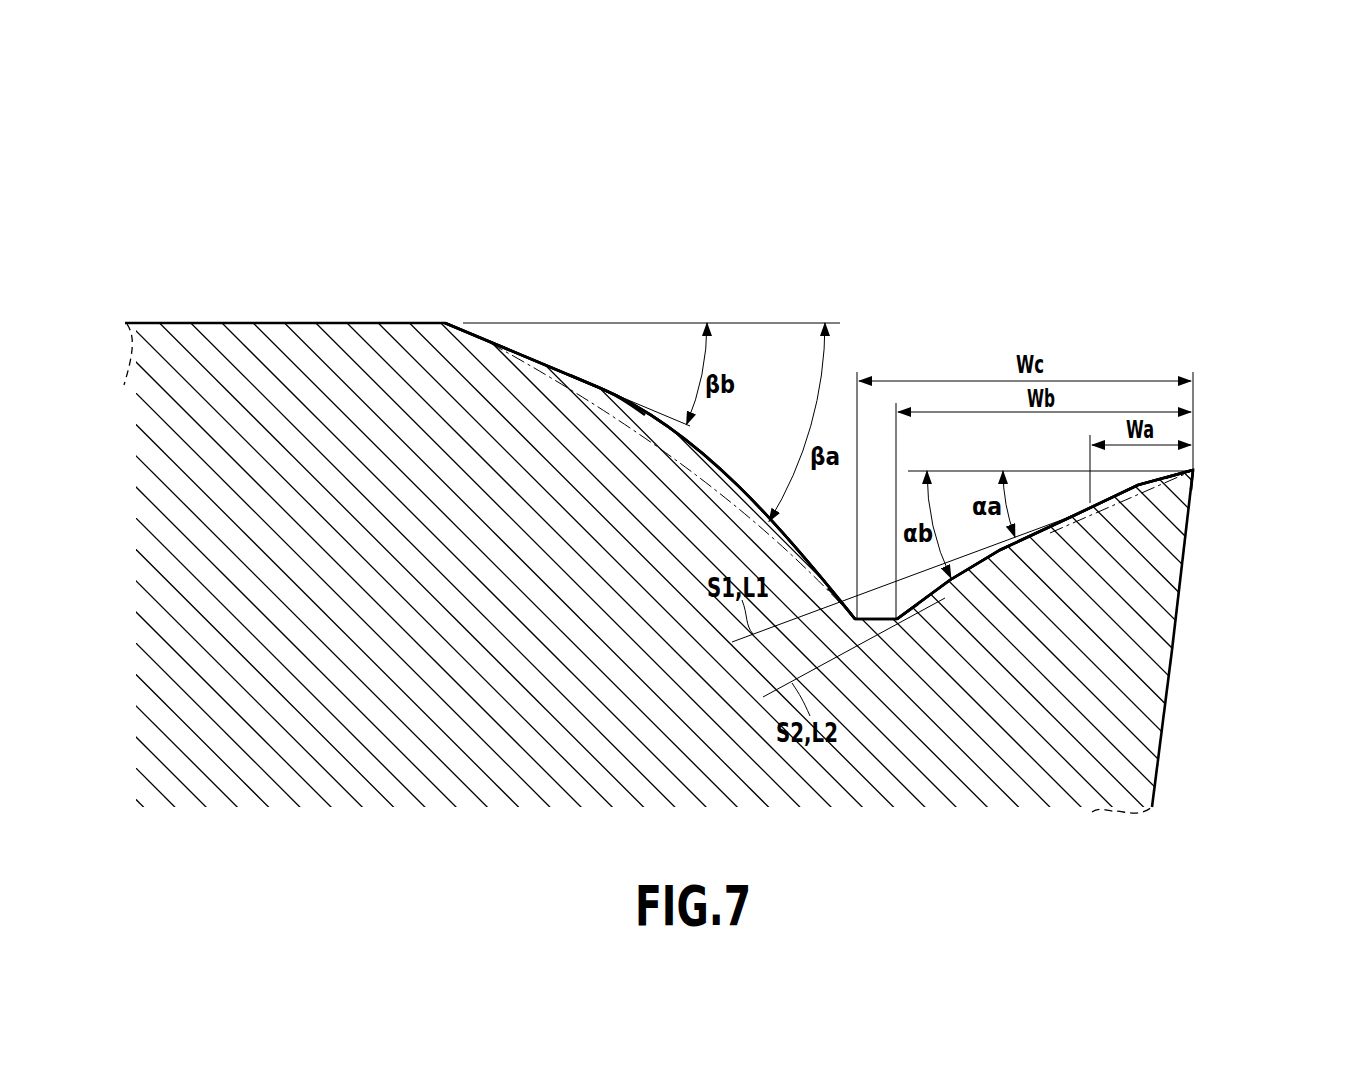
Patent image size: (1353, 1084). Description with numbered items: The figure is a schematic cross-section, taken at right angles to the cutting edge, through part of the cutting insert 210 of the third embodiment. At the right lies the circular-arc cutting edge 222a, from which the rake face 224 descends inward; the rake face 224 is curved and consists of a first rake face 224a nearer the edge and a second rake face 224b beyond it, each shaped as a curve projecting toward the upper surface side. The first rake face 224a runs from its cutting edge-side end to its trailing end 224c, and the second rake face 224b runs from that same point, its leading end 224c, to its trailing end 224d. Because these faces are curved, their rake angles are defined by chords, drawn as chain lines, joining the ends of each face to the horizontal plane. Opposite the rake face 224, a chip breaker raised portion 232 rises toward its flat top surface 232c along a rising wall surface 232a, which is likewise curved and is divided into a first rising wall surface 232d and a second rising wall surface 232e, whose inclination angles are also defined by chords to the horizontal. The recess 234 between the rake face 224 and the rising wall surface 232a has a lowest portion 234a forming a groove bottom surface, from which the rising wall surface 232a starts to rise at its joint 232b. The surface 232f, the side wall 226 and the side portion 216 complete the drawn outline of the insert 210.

The cutting insert 210 is at (1062, 175).
The side portion 216 is at (1150, 728).
The circular-arc cutting edge 222a is at (1196, 471).
The rake face 224 is at (1050, 492).
The first rake face 224a is at (1137, 481).
The second rake face 224b is at (991, 549).
The trailing end of first rake face 224c is at (1078, 508).
The trailing end of second rake face 224d is at (898, 621).
The side wall surface 226 is at (1187, 541).
The chip breaker raised portion 232 is at (443, 318).
The rising wall surface 232a is at (653, 374).
The lower end of curved surface 232b is at (853, 622).
The top surface 232c is at (193, 322).
The first rising wall surface 232d is at (733, 481).
The second rising wall surface 232e is at (533, 356).
The bend point 232f is at (604, 382).
The groove 234 is at (801, 261).
The groove bottom 234a is at (873, 620).